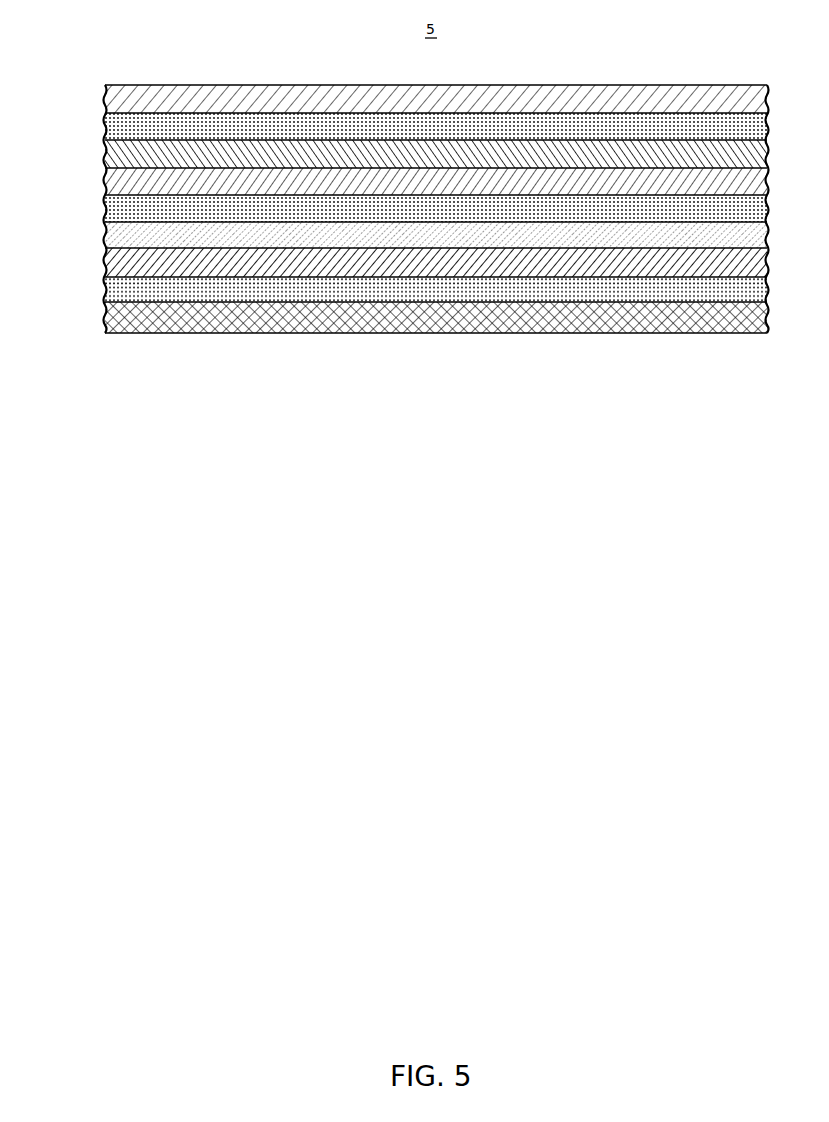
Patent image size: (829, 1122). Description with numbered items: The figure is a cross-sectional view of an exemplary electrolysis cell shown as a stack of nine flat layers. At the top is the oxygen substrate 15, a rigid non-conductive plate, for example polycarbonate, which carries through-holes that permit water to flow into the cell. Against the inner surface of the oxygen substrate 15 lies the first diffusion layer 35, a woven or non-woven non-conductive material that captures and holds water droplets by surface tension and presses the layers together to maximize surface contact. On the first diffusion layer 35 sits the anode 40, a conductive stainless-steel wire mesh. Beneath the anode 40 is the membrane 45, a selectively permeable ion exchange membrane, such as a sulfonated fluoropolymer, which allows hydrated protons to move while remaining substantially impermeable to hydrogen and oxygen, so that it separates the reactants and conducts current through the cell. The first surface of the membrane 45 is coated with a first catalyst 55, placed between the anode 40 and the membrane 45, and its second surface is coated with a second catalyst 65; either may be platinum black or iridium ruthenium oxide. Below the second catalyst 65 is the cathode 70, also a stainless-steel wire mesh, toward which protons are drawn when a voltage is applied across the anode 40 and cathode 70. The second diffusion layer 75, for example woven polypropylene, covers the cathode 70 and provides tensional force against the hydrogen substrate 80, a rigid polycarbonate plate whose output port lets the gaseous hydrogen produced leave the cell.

The oxygen substrate 15 is at (106, 88).
The first diffusion layer 35 is at (106, 124).
The anode 40 is at (106, 154).
The first catalyst 55 is at (106, 184).
The membrane 45 is at (106, 212).
The second catalyst 65 is at (106, 235).
The cathode 70 is at (106, 268).
The second diffusion layer 75 is at (110, 288).
The hydrogen substrate 80 is at (106, 322).